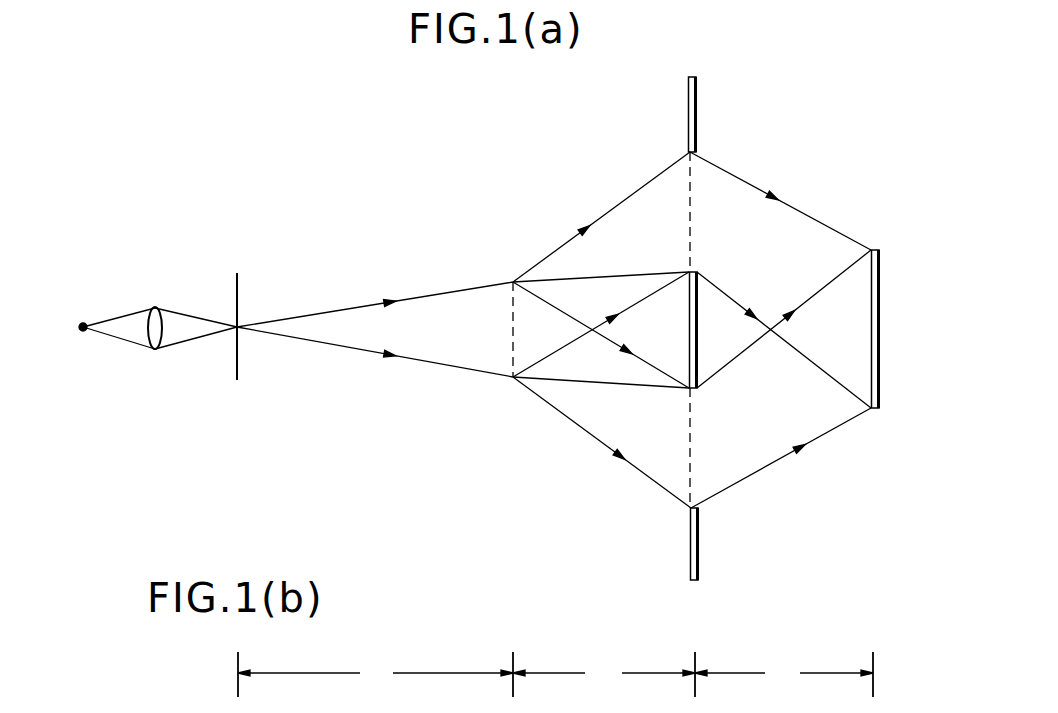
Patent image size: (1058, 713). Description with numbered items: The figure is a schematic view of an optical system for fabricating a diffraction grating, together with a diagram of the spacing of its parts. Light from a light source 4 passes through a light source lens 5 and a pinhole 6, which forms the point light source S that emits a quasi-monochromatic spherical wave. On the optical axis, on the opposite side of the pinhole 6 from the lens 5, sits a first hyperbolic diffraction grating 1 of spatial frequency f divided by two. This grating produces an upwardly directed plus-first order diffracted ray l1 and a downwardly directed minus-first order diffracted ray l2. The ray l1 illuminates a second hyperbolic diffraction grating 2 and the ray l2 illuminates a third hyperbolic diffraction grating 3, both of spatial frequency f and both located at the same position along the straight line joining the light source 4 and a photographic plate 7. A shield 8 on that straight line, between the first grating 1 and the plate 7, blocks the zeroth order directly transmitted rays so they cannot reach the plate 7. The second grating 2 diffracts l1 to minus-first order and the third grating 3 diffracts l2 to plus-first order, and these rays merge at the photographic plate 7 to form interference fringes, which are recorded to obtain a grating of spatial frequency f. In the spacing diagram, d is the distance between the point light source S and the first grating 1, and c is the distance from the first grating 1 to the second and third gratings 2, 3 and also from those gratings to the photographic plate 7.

In FIG. 1A, the first hyperbolic diffraction grating 1 is at (510, 317).
In FIG. 1A, the second hyperbolic diffraction grating 2 is at (688, 190).
In FIG. 1A, the third hyperbolic diffraction grating 3 is at (690, 480).
In FIG. 1A, the light source 4 is at (83, 320).
In FIG. 1A, the light source lens 5 is at (153, 306).
In FIG. 1A, the pinhole 6 is at (238, 280).
In FIG. 1A, the photographic plate 7 is at (880, 275).
In FIG. 1A, the shield 8 is at (697, 100).
In FIG. 1A, the point light source S is at (240, 325).
In FIG. 1A, the +1st order diffracted ray l1 is at (615, 217).
In FIG. 1A, the −1st order diffracted ray l2 is at (590, 425).
In FIG. 1B, the distance d is at (375, 674).
In FIG. 1B, the distance c is at (693, 674).